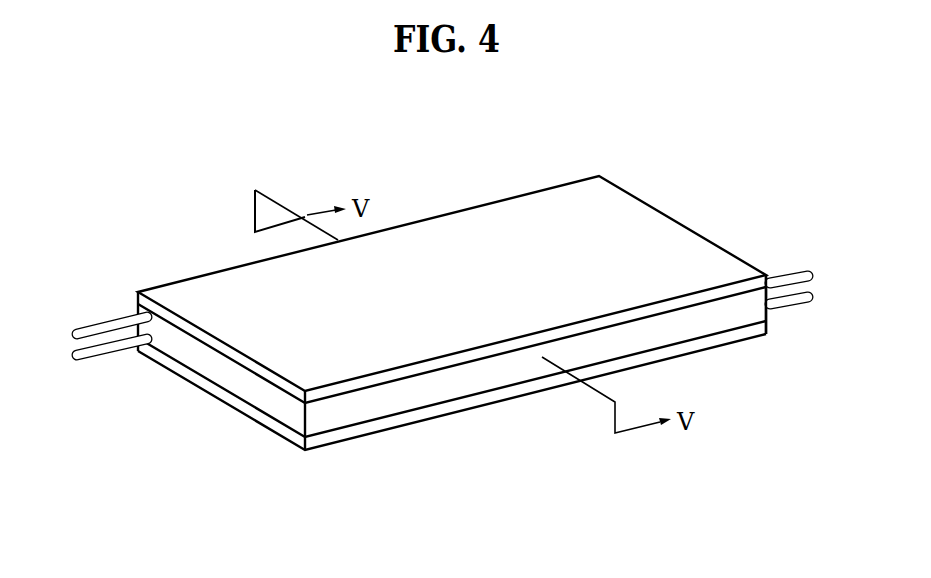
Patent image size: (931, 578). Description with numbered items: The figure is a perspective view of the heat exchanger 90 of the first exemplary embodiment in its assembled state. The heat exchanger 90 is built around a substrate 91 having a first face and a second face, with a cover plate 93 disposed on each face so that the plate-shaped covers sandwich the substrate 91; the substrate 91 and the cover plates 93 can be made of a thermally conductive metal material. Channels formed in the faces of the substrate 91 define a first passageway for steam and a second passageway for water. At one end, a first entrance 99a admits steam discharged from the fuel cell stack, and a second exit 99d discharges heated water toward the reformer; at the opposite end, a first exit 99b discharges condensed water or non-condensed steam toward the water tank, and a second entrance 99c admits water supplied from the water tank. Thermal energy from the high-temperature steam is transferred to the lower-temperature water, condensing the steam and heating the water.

The heat exchanger 90 is at (458, 133).
The substrate 91 is at (215, 376).
The cover plate 93 is at (677, 223).
The first entrance 99a is at (788, 278).
The first exit 99b is at (97, 328).
The second entrance 99c is at (792, 308).
The second exit 99d is at (95, 350).